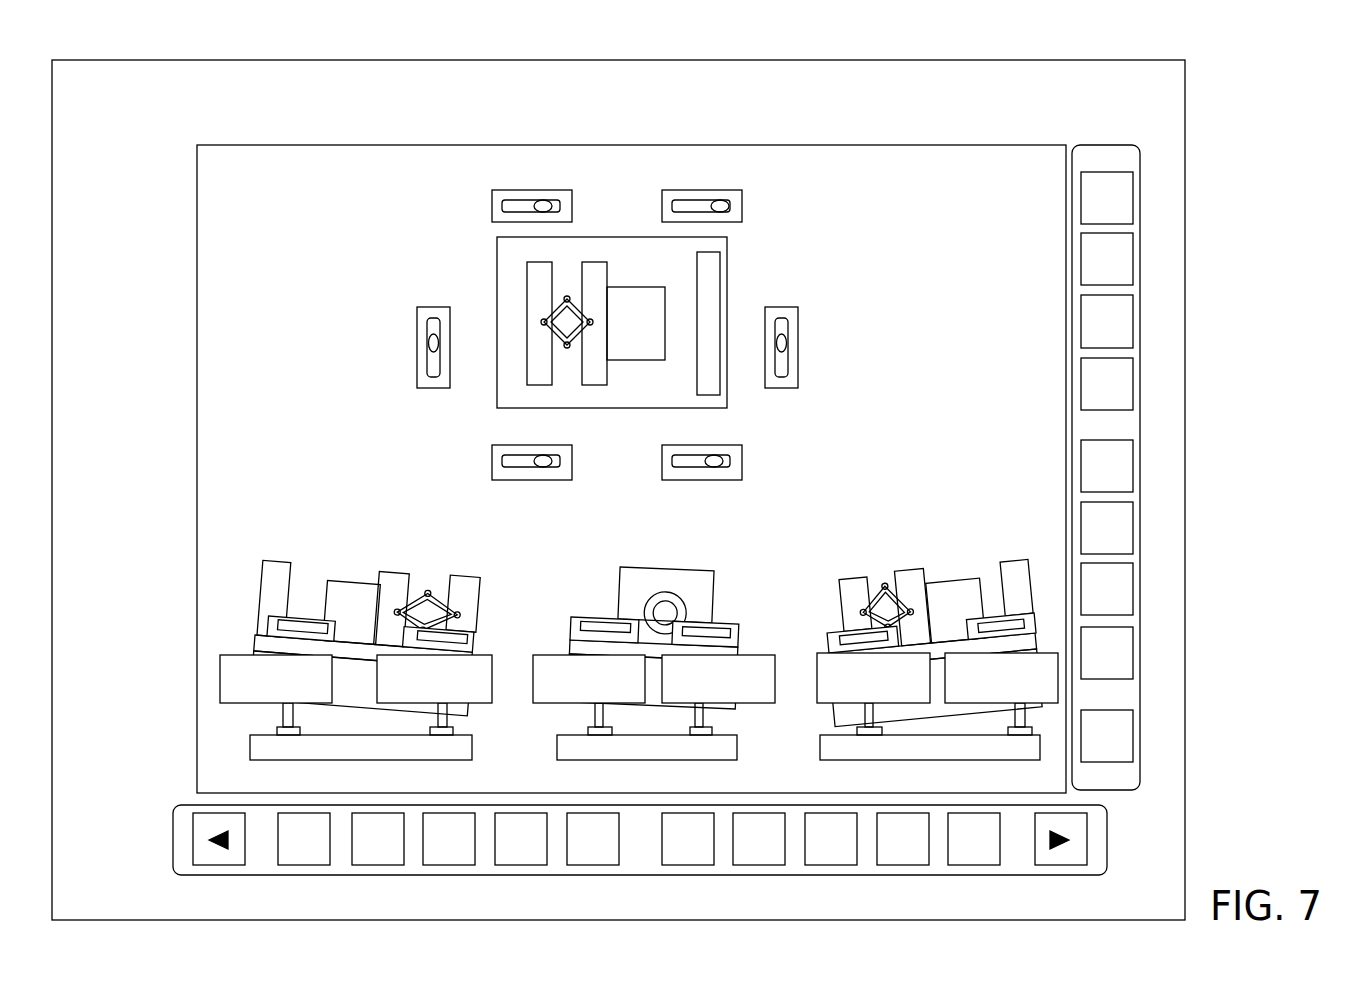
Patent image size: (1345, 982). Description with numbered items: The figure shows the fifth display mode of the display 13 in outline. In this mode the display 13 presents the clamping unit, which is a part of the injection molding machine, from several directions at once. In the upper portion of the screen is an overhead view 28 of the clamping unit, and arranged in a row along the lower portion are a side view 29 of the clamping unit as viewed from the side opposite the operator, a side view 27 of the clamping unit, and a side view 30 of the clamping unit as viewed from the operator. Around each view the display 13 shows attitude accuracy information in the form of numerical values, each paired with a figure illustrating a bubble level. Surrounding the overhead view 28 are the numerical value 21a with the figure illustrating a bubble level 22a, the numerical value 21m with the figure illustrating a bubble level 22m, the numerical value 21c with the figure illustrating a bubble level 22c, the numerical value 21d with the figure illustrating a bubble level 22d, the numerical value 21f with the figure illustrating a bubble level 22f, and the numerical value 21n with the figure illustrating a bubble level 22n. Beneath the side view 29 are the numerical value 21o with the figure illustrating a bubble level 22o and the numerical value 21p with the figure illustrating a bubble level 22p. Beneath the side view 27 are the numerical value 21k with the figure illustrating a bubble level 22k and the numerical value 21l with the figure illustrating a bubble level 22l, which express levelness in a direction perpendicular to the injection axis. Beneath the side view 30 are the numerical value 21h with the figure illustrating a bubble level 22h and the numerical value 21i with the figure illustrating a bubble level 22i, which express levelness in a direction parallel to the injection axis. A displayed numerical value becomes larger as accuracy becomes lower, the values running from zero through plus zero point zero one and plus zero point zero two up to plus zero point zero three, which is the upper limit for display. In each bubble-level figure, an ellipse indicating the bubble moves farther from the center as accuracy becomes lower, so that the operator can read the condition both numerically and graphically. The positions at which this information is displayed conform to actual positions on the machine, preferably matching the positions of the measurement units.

The display 13 is at (982, 60).
The numerical value (character) 21a is at (498, 171).
The numerical value (character) 21c is at (397, 274).
The numerical value (character) 21d is at (818, 276).
The numerical value (character) 21f is at (498, 425).
The numerical value (character) 21m is at (740, 170).
The numerical value (character) 21n is at (735, 425).
The numerical value (character) 21o is at (295, 618).
The numerical value (character) 21p is at (478, 640).
The numerical value (character) 21k is at (590, 617).
The numerical value (character) 21l is at (733, 626).
The numerical value (character) 21h is at (837, 633).
The numerical value (character) 21i is at (1036, 622).
The figure illustrating bubble level 22a is at (493, 205).
The figure illustrating bubble level 22c is at (417, 343).
The figure illustrating bubble level 22d is at (798, 340).
The figure illustrating bubble level 22f is at (494, 460).
The figure illustrating bubble level 22m is at (743, 205).
The figure illustrating bubble level 22n is at (743, 460).
The figure illustrating bubble level 22o is at (245, 705).
The figure illustrating bubble level 22p is at (473, 705).
The figure illustrating bubble level 22k is at (563, 705).
The figure illustrating bubble level 22l is at (738, 705).
The figure illustrating bubble level 22h is at (827, 705).
The figure illustrating bubble level 22i is at (1040, 705).
The side view 27 is at (615, 554).
The overhead view 28 is at (606, 232).
The side view 29 is at (378, 553).
The side view 30 is at (924, 561).